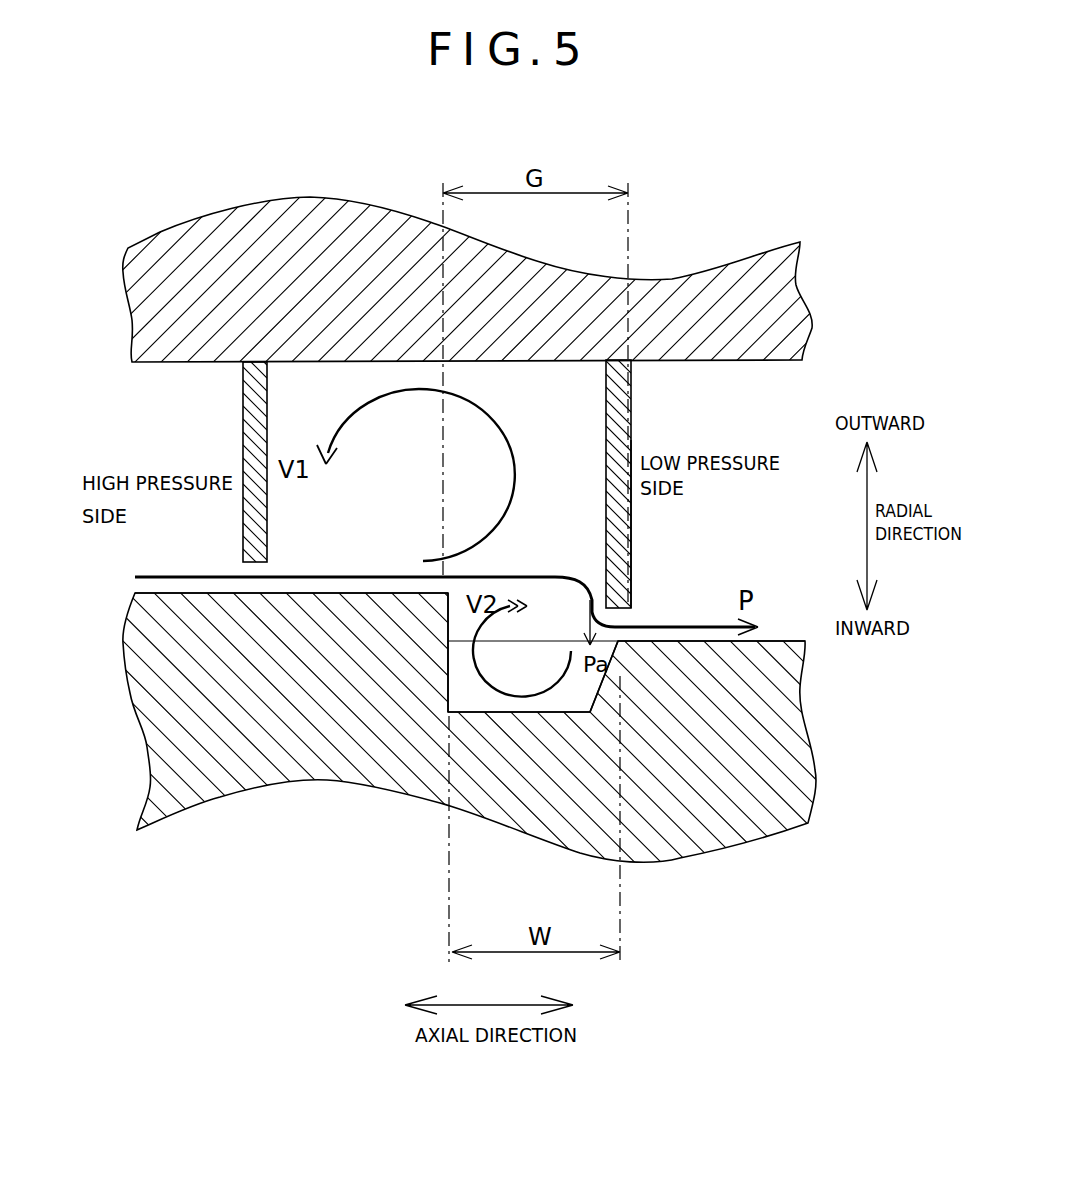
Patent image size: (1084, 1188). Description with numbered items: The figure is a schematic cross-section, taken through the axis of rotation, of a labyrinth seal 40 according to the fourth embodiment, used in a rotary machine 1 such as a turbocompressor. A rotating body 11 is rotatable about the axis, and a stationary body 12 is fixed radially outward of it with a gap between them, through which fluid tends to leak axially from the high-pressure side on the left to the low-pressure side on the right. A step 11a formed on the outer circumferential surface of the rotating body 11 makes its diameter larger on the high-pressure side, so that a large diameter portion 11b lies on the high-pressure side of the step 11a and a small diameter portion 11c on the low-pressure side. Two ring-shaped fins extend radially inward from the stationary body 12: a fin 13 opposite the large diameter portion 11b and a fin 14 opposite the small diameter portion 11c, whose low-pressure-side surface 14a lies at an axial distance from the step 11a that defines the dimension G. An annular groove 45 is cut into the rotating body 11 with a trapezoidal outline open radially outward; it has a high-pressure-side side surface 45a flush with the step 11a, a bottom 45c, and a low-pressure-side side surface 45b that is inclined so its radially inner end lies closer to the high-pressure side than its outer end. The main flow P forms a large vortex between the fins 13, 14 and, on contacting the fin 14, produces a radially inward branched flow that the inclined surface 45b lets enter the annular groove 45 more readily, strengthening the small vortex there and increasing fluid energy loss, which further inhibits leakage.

The rotary machine 1 is at (96, 218).
The stationary body 12 is at (795, 307).
The labyrinth seal 40 is at (757, 415).
The fin 13 is at (242, 437).
The fin 14 is at (623, 433).
The low-pressure-side surface 14a is at (632, 530).
The rotating body 11 is at (800, 752).
The step 11a is at (448, 618).
The large diameter portion 11b is at (357, 598).
The small diameter portion 11c is at (693, 648).
The annular groove 45 is at (557, 627).
The high-pressure-side side surface 45a is at (448, 688).
The low-pressure-side side surface 45b is at (588, 710).
The bottom 45c is at (547, 712).